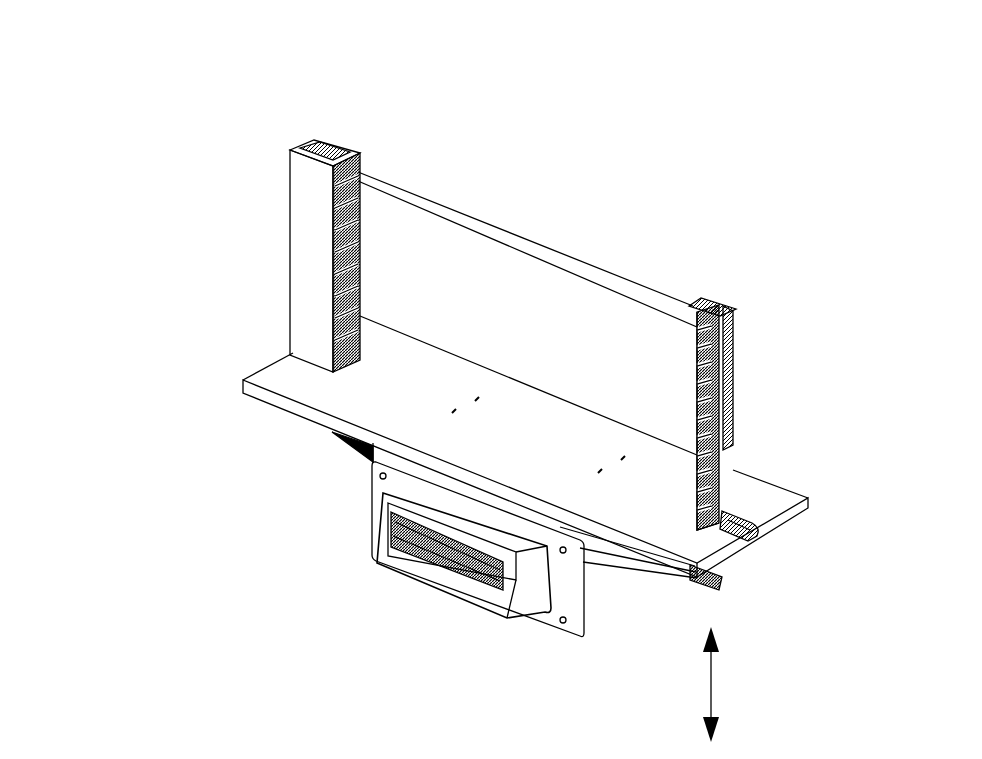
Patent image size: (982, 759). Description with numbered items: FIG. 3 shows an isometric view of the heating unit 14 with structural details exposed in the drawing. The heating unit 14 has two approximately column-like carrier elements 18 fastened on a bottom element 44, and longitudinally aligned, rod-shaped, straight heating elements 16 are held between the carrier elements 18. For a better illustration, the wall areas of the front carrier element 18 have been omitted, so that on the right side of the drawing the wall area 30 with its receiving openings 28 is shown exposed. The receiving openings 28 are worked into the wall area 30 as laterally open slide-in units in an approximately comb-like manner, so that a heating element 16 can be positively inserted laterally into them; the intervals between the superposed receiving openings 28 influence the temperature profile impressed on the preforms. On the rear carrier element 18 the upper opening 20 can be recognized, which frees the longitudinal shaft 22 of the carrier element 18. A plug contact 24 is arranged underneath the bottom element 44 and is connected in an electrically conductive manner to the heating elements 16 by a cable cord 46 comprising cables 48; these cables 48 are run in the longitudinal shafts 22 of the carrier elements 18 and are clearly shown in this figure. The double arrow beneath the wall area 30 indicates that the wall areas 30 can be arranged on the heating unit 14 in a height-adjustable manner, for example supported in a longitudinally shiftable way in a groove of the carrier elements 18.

The heating unit 14 is at (168, 258).
The heating element 16 is at (567, 247).
The carrier element 18 is at (293, 237).
The upper opening 20 is at (330, 143).
The longitudinal shaft 22 is at (335, 146).
The plug contact 24 is at (413, 587).
The receiving openings 28 is at (367, 247).
The wall area 30 is at (720, 460).
The bottom element 44 is at (293, 412).
The cable cord 46 is at (367, 455).
The cables 48 is at (737, 340).